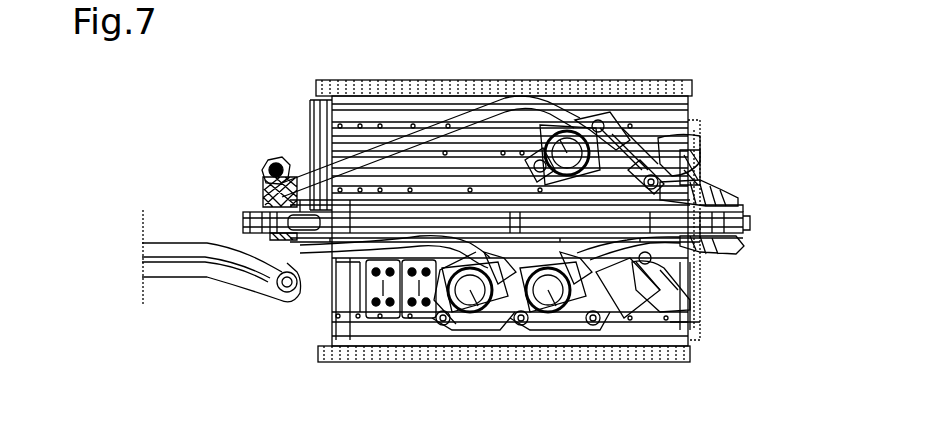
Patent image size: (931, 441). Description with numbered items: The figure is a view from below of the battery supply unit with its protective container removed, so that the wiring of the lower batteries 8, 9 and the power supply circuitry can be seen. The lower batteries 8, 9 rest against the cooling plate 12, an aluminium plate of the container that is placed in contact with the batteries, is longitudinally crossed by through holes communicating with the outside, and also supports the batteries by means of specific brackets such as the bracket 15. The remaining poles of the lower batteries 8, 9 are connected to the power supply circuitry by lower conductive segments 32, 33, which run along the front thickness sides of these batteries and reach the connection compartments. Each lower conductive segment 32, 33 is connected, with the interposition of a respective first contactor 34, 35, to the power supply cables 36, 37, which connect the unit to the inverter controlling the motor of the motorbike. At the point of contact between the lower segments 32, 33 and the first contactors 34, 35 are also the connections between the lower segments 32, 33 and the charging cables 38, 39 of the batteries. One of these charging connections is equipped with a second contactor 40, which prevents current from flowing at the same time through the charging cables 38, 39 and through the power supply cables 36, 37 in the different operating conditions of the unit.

The lower battery 8 is at (668, 362).
The lower battery 9 is at (634, 84).
The cooling plate 12 is at (205, 210).
The bracket 15 is at (382, 130).
The lower conductive segment 32 is at (690, 148).
The lower conductive segment 33 is at (678, 295).
The first contactor 34 is at (556, 134).
The first contactor 35 is at (556, 318).
The power supply cable 36 is at (725, 195).
The power supply cable 37 is at (736, 236).
The charging cable 38 is at (293, 153).
The charging cable 39 is at (346, 248).
The second contactor 40 is at (472, 318).